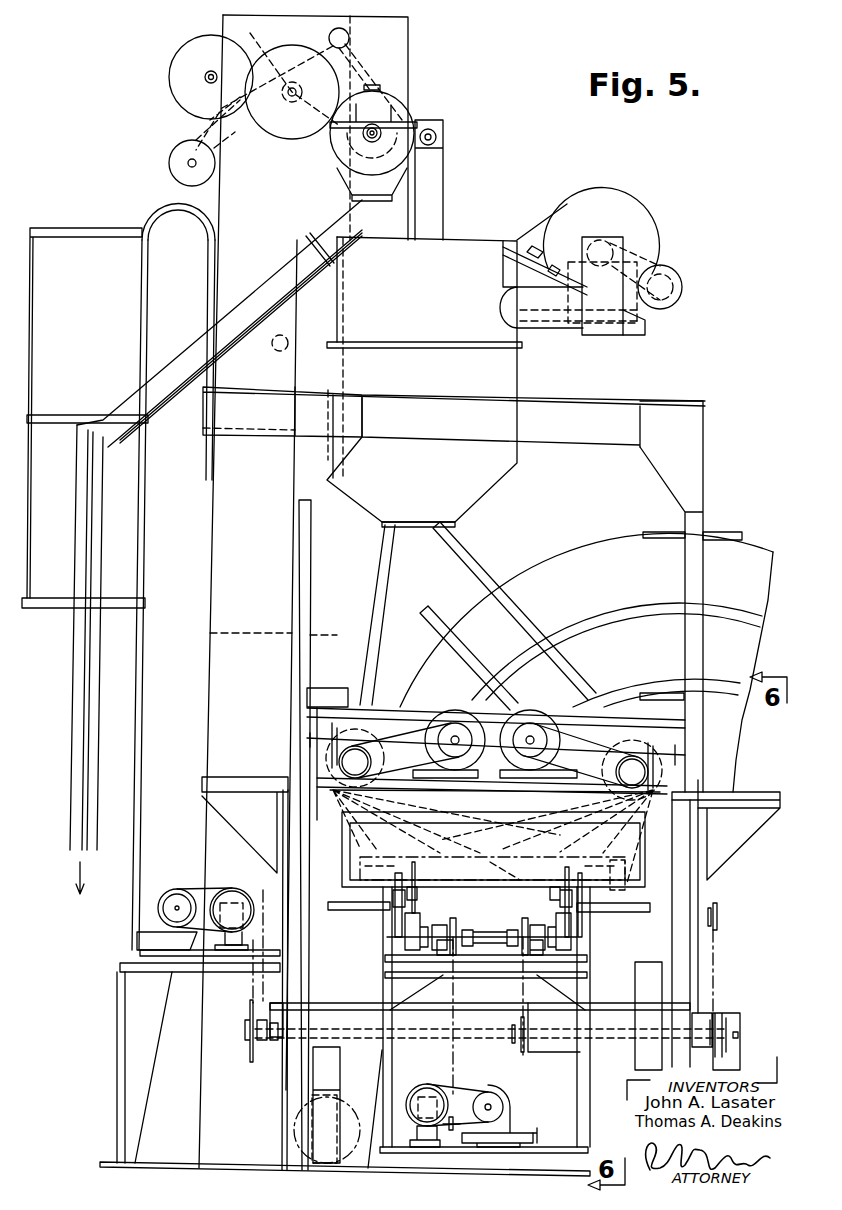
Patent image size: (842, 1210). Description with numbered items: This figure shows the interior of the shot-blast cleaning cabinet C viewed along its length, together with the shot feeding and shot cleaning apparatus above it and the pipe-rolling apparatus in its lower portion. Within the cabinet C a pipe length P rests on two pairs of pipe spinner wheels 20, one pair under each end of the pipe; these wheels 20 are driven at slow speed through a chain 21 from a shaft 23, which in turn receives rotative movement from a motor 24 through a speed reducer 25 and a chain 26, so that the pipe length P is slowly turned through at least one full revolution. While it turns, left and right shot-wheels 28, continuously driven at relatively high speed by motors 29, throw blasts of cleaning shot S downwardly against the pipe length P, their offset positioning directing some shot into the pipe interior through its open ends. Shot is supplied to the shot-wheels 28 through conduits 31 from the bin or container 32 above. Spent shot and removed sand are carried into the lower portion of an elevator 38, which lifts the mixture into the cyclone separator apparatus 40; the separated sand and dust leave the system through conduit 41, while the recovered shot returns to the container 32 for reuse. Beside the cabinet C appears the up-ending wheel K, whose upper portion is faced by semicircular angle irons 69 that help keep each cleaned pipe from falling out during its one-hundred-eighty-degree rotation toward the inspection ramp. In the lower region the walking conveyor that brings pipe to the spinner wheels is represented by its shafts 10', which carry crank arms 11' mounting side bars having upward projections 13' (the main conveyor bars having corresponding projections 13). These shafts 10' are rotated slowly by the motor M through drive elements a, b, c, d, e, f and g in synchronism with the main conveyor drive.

The cyclone separator apparatus 40 is at (409, 62).
The elevator 38 is at (209, 682).
The conduit 41 is at (72, 718).
The bin or container 32 is at (475, 490).
The conduits 31 is at (455, 556).
The up-ending wheel K is at (577, 545).
The semicircular angle irons 69 is at (657, 683).
The motors 29 is at (534, 711).
The shot-wheels 28 is at (612, 766).
The cleaning cabinet C is at (253, 758).
The pipe spinner wheels 20 is at (576, 872).
The upward projections 13' is at (482, 881).
The cleaning shot S is at (490, 849).
The pipe length P is at (533, 850).
The crank arms 11' is at (488, 919).
The drive element d is at (460, 917).
The drive element e is at (520, 927).
The shafts 10' is at (482, 927).
The motor 24 is at (176, 890).
The speed reducer 25 is at (232, 905).
The chain 21 is at (716, 973).
The chain 26 is at (252, 990).
The shaft 23 is at (447, 1032).
The drive element f is at (518, 1045).
The drive element g is at (608, 1046).
The motor M is at (513, 1110).
The drive element a is at (502, 1097).
The drive element b is at (418, 1090).
The upward projections 13 is at (426, 1102).
The drive element c is at (452, 1109).